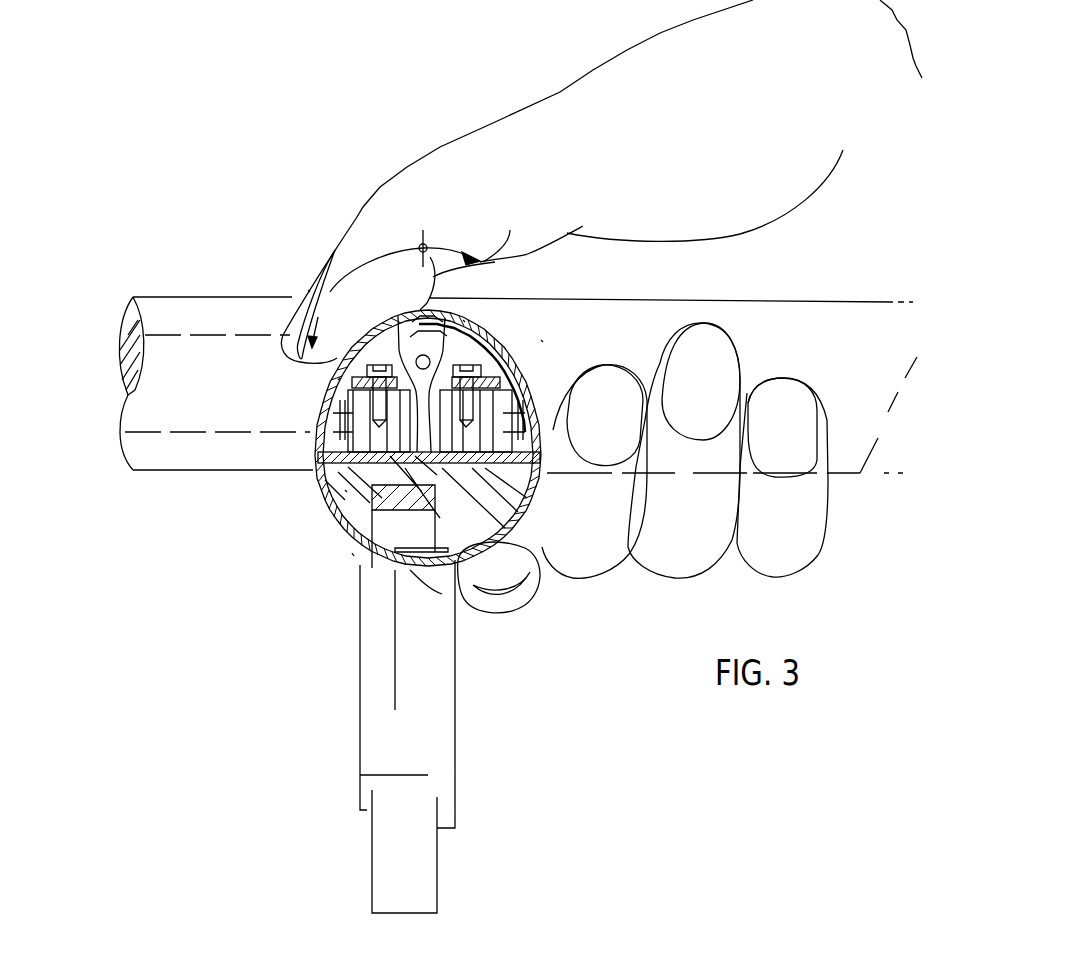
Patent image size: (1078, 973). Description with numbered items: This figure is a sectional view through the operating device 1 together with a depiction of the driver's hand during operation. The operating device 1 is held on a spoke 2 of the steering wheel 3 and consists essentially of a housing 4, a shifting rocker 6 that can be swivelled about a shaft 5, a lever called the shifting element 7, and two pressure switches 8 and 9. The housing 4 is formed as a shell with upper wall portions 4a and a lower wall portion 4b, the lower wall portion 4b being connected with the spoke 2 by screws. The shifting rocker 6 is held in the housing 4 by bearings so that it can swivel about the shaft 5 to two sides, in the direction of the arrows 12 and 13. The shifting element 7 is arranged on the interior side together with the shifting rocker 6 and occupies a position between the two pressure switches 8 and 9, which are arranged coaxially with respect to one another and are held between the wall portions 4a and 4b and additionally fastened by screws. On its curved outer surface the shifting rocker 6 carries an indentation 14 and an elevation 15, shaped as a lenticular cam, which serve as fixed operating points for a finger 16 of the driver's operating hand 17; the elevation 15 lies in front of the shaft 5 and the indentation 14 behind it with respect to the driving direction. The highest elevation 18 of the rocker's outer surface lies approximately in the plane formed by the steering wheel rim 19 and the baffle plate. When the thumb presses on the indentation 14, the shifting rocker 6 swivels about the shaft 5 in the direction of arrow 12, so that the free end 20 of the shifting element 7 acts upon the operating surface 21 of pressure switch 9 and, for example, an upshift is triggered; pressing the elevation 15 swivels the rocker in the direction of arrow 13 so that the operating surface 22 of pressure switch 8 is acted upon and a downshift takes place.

The operating device 1 is at (430, 444).
The spoke 2 is at (410, 515).
The steering wheel 3 is at (98, 273).
The housing 4 is at (318, 483).
The upper wall portions 4a is at (334, 375).
The lower wall portion 4b is at (338, 496).
The shaft 5 is at (397, 320).
The shifting rocker 6 is at (541, 340).
The shifting element 7 is at (463, 320).
The pressure switch 8 is at (316, 438).
The pressure switch 9 is at (541, 425).
The arrow 12 is at (368, 257).
The arrow 13 is at (440, 254).
The indentation 14 is at (367, 337).
The elevation 15 is at (515, 310).
The finger 16 is at (308, 290).
The operating hand 17 is at (882, 359).
The highest elevation 18 is at (420, 310).
The steering wheel rim 19 is at (352, 553).
The free end 20 is at (330, 403).
The operating surface 21 is at (524, 497).
The operating surface 22 is at (473, 551).